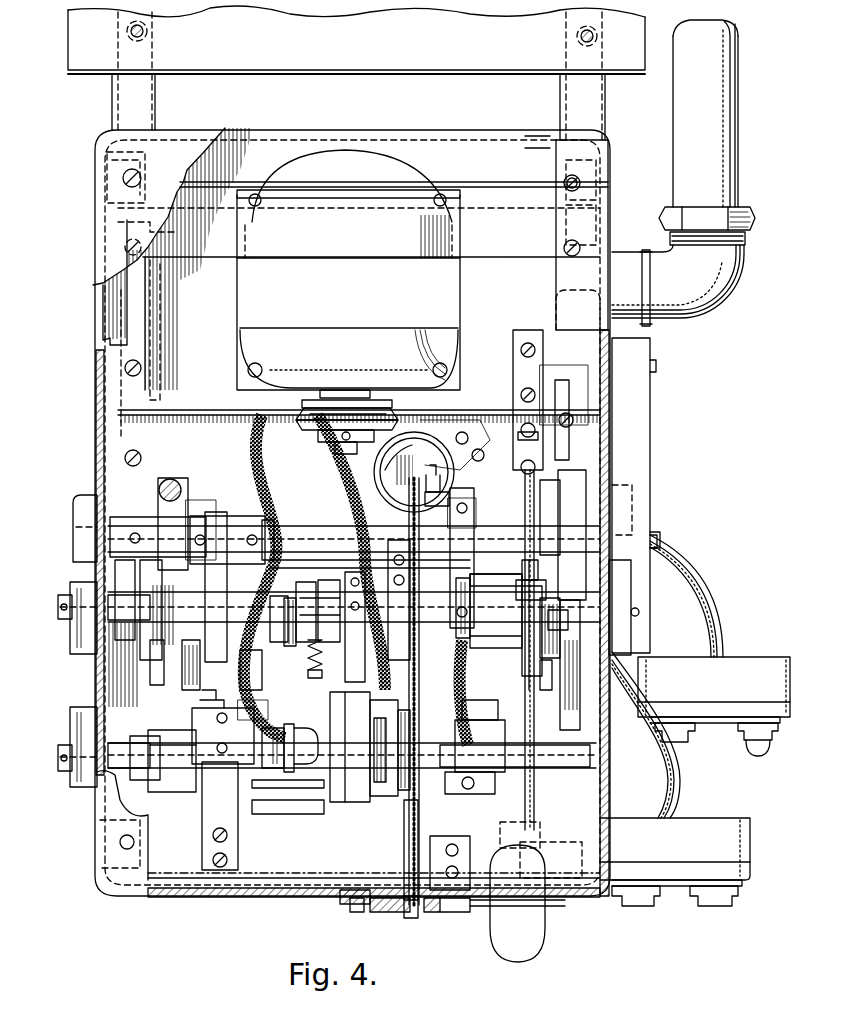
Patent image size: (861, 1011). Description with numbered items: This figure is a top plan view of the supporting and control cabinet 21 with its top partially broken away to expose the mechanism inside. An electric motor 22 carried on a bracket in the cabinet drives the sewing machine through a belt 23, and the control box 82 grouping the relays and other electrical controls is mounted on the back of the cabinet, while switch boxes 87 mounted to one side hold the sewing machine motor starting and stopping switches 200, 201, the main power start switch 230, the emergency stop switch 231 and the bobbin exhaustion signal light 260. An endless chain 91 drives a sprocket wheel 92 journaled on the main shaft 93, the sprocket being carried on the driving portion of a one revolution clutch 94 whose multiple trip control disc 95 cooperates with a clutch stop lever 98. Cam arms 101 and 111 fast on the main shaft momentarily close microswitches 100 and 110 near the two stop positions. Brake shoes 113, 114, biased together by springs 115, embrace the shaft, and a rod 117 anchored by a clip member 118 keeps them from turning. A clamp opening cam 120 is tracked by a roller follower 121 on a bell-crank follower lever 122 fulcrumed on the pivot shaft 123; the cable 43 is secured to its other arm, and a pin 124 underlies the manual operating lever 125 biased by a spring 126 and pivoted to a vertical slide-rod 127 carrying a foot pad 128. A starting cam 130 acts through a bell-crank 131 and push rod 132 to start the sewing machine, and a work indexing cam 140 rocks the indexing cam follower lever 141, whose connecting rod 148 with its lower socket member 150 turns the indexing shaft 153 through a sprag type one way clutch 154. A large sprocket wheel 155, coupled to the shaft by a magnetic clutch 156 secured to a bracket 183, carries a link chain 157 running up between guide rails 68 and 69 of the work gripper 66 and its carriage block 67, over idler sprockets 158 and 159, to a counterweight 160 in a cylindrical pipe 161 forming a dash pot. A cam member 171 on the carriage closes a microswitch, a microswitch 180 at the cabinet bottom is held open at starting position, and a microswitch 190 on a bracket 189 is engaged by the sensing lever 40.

The cabinet 21 is at (266, 903).
The electric motor 22 is at (240, 312).
The belt 23 is at (305, 412).
The sensing lever 40 is at (205, 684).
The cable 43 is at (556, 640).
The work gripper 66 is at (410, 920).
The carriage block 67 is at (390, 914).
The guide rail 68 is at (460, 912).
The guide rail 69 is at (356, 905).
The control box 82 is at (380, 56).
The switch boxes 87 is at (762, 668).
The endless chain 91 is at (545, 690).
The sprocket wheel 92 is at (534, 664).
The main shaft 93 is at (396, 640).
The one revolution clutch 94 is at (494, 632).
The multiple trip control disc 95 is at (466, 636).
The clutch stop lever 98 is at (468, 525).
The microswitch 100 is at (276, 566).
The cam arm 101 is at (274, 596).
The microswitch 110 is at (344, 562).
The cam arm 111 is at (354, 676).
The brake shoe 113 is at (328, 590).
The brake shoe 114 is at (322, 640).
The springs 115 is at (332, 675).
The rod 117 is at (312, 601).
The clip member 118 is at (300, 648).
The clamp opening cam 120 is at (578, 698).
The roller follower 121 is at (573, 496).
The bell-crank follower lever 122 is at (550, 482).
The pivot shaft 123 is at (296, 532).
The pin 124 is at (518, 594).
The manual operating lever 125 is at (520, 800).
The spring 126 is at (522, 428).
The vertical slide-rod 127 is at (540, 846).
The foot pad 128 is at (535, 935).
The sewing machine starting cam 130 is at (142, 680).
The bell-crank 131 is at (176, 512).
The push rod 132 is at (170, 478).
The work indexing cam 140 is at (190, 650).
The indexing cam follower lever 141 is at (215, 548).
The connecting rod 148 is at (267, 748).
The socket member 150 is at (258, 672).
The indexing shaft 153 is at (320, 752).
The sprag type one way clutch 154 is at (178, 762).
The large sprocket wheel 155 is at (398, 812).
The magnetic clutch 156 is at (358, 810).
The link chain 157 is at (421, 662).
The idler sprocket 158 is at (404, 860).
The idler sprocket 159 is at (447, 490).
The counterweight 160 is at (406, 460).
The cylindrical pipe 161 is at (413, 440).
The cam member 171 is at (432, 914).
The microswitch 180 is at (470, 732).
The bracket 183 is at (292, 806).
The bracket 189 is at (210, 806).
The microswitch 190 is at (208, 712).
The switch 200 is at (644, 906).
The switch 201 is at (716, 906).
The main power start switch 230 is at (680, 743).
The emergency stop switch 231 is at (770, 740).
The signal light 260 is at (758, 752).